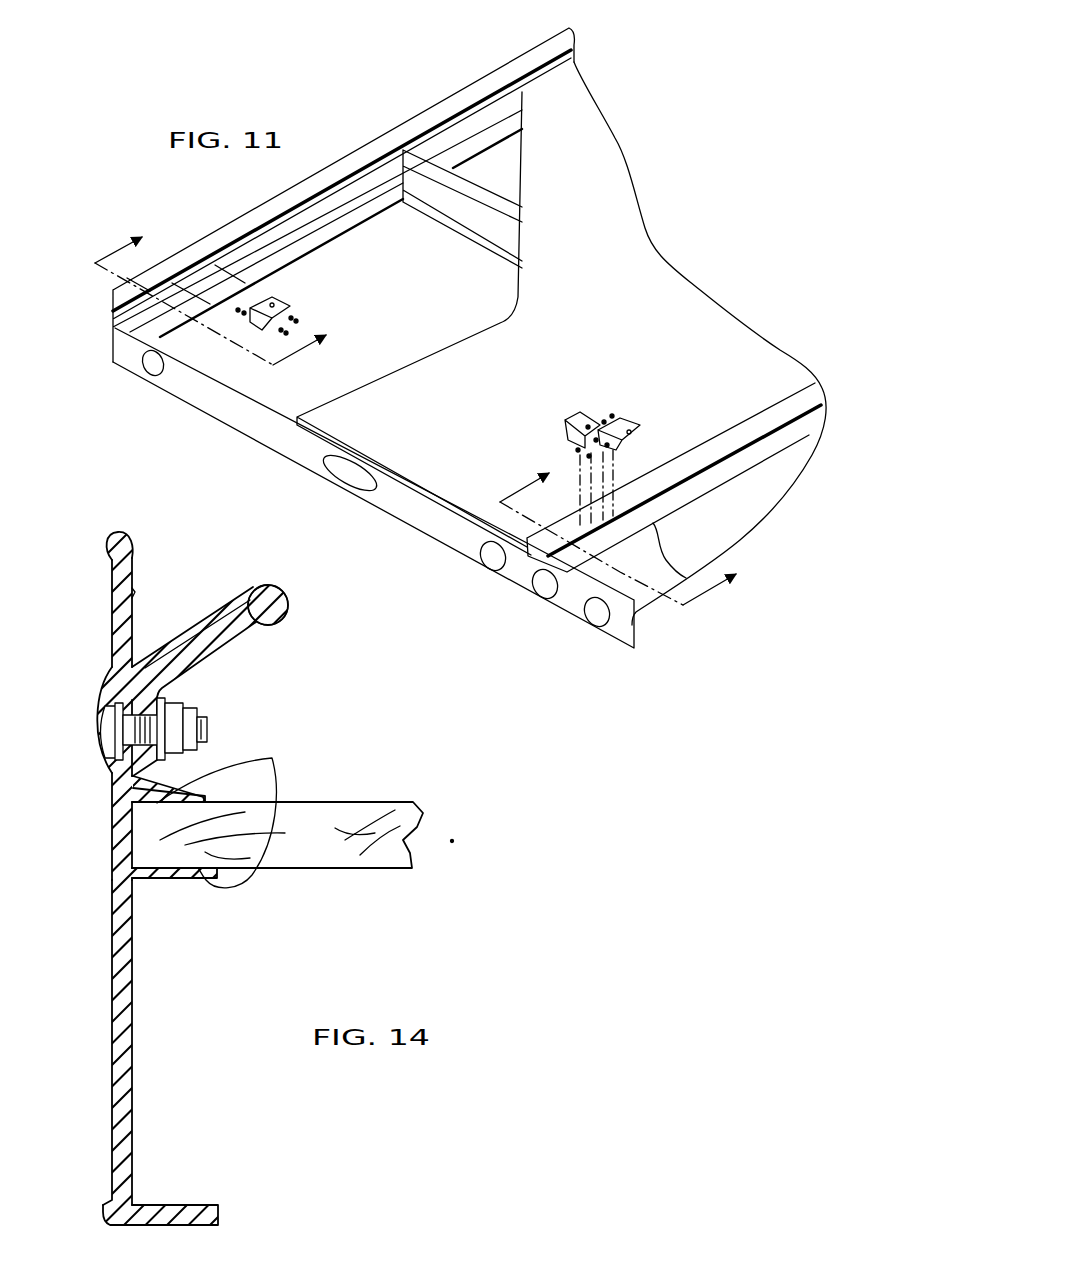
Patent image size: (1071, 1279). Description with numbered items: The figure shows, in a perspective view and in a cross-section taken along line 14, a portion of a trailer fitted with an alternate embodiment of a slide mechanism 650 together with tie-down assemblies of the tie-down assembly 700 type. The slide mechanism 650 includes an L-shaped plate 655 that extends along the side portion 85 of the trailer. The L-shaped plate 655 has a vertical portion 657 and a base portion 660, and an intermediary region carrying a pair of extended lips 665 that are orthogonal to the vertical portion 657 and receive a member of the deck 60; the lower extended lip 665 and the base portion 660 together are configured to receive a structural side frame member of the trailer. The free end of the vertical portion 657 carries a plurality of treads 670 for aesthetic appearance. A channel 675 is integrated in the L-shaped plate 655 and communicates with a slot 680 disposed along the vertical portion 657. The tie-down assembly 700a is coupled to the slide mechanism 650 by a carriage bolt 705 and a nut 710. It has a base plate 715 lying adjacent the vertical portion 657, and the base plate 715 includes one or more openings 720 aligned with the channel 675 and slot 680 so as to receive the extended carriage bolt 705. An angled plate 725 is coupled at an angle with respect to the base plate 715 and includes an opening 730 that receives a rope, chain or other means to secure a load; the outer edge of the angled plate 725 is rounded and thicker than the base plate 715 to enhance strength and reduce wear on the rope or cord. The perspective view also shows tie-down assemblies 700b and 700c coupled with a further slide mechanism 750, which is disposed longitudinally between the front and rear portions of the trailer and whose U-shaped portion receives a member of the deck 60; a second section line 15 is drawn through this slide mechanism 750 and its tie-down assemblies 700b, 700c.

In FIG. 11, the side portion 85 is at (368, 58).
In FIG. 11, the slide mechanism 650 is at (366, 148).
In FIG. 14, the slide mechanism 650 is at (103, 650).
In FIG. 11, the slot 680 is at (433, 127).
In FIG. 14, the slot 680 is at (112, 744).
In FIG. 11, the deck 60 is at (590, 322).
In FIG. 14, the deck 60 is at (377, 789).
In FIG. 11, the slide mechanism 750 is at (745, 460).
In FIG. 11, the section line 14— 14 is at (228, 287).
In FIG. 11, the section line 15— 15 is at (633, 524).
In FIG. 11, the tie-down assembly 700a is at (303, 292).
In FIG. 11, the tie-down assembly 700b is at (568, 411).
In FIG. 11, the tie-down assembly 700c is at (638, 420).
In FIG. 14, the tie-down assembly 700 is at (300, 587).
In FIG. 14, the treads 670 is at (106, 578).
In FIG. 14, the vertical portion 657 is at (128, 590).
In FIG. 14, the L-shaped plate 655 is at (140, 967).
In FIG. 14, the base portion 660 is at (189, 1205).
In FIG. 14, the channel 675 is at (97, 724).
In FIG. 14, the opening 730 is at (199, 638).
In FIG. 14, the angled plate 725 is at (223, 612).
In FIG. 14, the base plate 715 is at (115, 782).
In FIG. 14, the extended lips 665 is at (275, 764).
In FIG. 14, the openings 720 is at (140, 705).
In FIG. 14, the nut 710 is at (173, 726).
In FIG. 14, the carriage bolt 705 is at (208, 729).